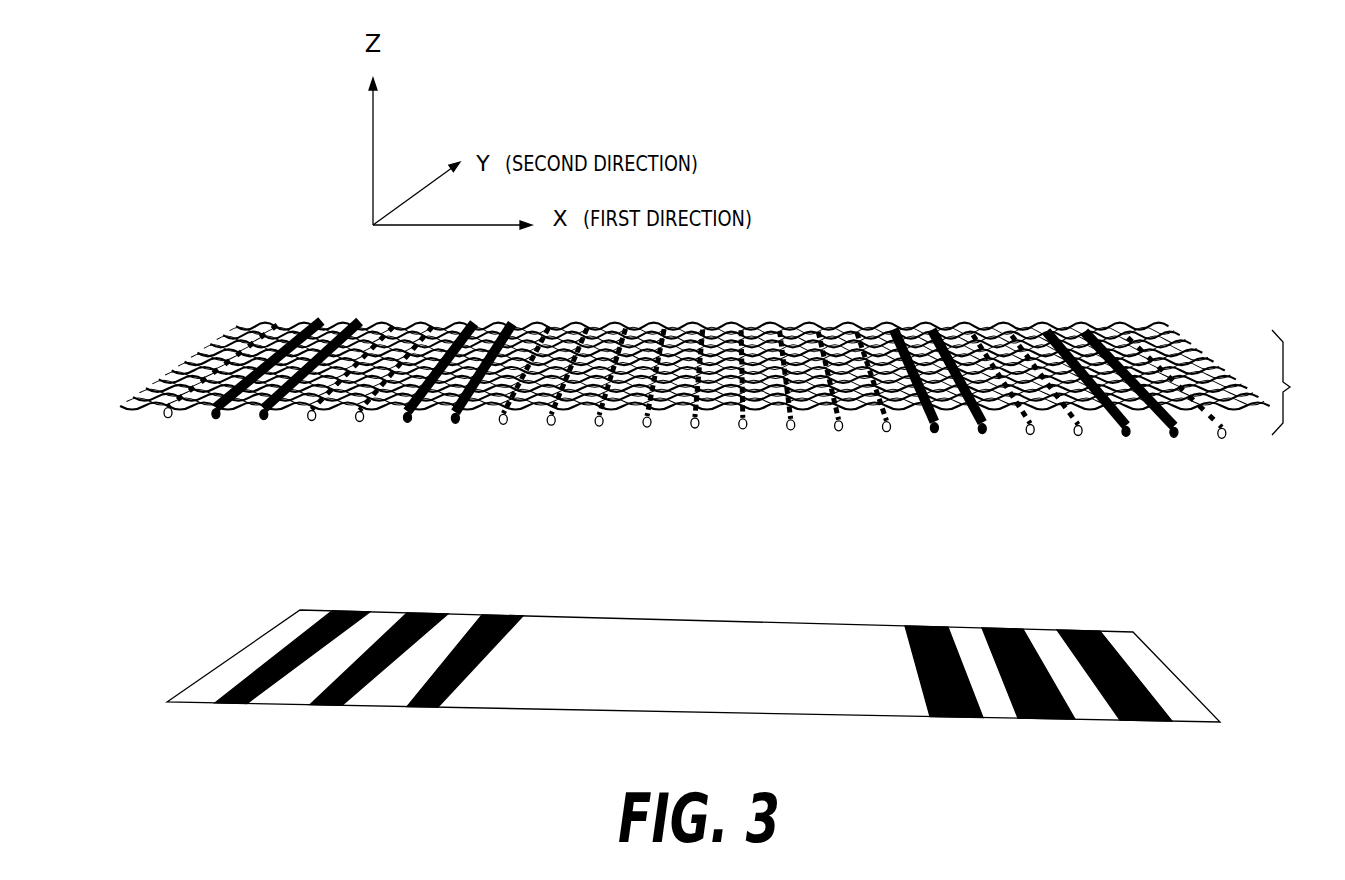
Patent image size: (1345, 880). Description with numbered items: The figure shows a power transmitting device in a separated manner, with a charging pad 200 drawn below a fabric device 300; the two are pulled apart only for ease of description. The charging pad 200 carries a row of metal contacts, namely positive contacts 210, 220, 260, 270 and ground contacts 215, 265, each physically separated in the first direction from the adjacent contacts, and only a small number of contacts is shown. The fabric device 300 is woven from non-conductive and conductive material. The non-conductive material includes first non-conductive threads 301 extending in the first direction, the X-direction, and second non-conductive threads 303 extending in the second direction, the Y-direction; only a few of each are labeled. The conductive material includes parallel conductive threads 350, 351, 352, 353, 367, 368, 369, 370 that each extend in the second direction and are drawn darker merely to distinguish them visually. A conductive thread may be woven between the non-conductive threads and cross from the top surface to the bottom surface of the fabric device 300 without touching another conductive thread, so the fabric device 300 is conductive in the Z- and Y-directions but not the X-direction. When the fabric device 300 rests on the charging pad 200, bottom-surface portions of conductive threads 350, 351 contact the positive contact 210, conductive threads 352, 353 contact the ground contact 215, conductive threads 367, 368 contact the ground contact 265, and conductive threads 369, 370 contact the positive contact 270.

The charging pad 200 is at (224, 618).
The positive contact 210 is at (245, 700).
The ground contact 215 is at (338, 703).
The positive contact 220 is at (437, 703).
The positive contact 260 is at (958, 715).
The ground contact 265 is at (1053, 715).
The positive contact 270 is at (1148, 717).
The fabric device 300 is at (224, 308).
The first non-conductive thread 301 is at (1290, 387).
The second non-conductive thread 303 is at (170, 417).
The conductive thread 350 is at (215, 420).
The conductive thread 351 is at (262, 420).
The conductive thread 352 is at (407, 422).
The conductive thread 353 is at (453, 420).
The conductive thread 367 is at (933, 435).
The conductive thread 368 is at (982, 437).
The conductive thread 369 is at (1125, 438).
The conductive thread 370 is at (1173, 440).